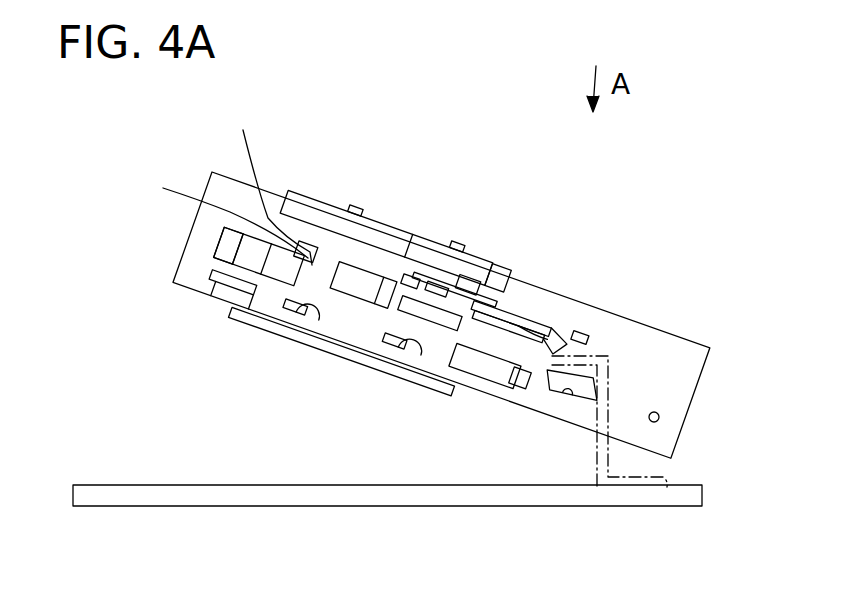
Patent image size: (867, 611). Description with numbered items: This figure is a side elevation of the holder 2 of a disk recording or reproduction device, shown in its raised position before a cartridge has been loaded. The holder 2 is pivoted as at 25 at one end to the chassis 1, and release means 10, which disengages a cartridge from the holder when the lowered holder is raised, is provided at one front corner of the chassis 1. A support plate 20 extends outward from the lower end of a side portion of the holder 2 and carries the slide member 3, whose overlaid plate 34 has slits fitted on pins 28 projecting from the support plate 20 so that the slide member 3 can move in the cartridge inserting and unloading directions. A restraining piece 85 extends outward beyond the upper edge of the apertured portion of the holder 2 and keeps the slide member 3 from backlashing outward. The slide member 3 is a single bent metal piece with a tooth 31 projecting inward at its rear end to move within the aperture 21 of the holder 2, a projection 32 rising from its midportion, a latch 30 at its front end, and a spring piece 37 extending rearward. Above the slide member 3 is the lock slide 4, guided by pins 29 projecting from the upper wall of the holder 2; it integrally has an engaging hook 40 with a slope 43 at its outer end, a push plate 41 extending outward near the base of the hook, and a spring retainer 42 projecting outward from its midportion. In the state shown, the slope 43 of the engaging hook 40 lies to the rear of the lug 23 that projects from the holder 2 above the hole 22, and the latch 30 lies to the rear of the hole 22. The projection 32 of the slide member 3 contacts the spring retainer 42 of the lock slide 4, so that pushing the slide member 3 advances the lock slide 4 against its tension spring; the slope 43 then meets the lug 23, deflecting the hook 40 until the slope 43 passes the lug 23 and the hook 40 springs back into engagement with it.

The chassis 1 is at (313, 506).
The holder 2 is at (693, 342).
The slide member 3 is at (212, 266).
The lock slide 4 is at (310, 200).
The release means 10 is at (595, 443).
The support plate 20 is at (330, 355).
The aperture 21 is at (269, 178).
The hole 22 is at (565, 390).
The lug 23 is at (582, 334).
The pivot 25 is at (660, 417).
The pin 28 is at (307, 333).
The pin 29 is at (358, 200).
The latch 30 is at (503, 367).
The tooth 31 is at (216, 212).
The projection 32 is at (411, 263).
The overlaid plate 34 is at (222, 290).
The spring piece 37 is at (222, 245).
The engaging hook 40 is at (530, 325).
The push plate 41 is at (520, 275).
The spring retainer 42 is at (470, 277).
The slope 43 is at (557, 325).
The restraining piece 85 is at (400, 265).